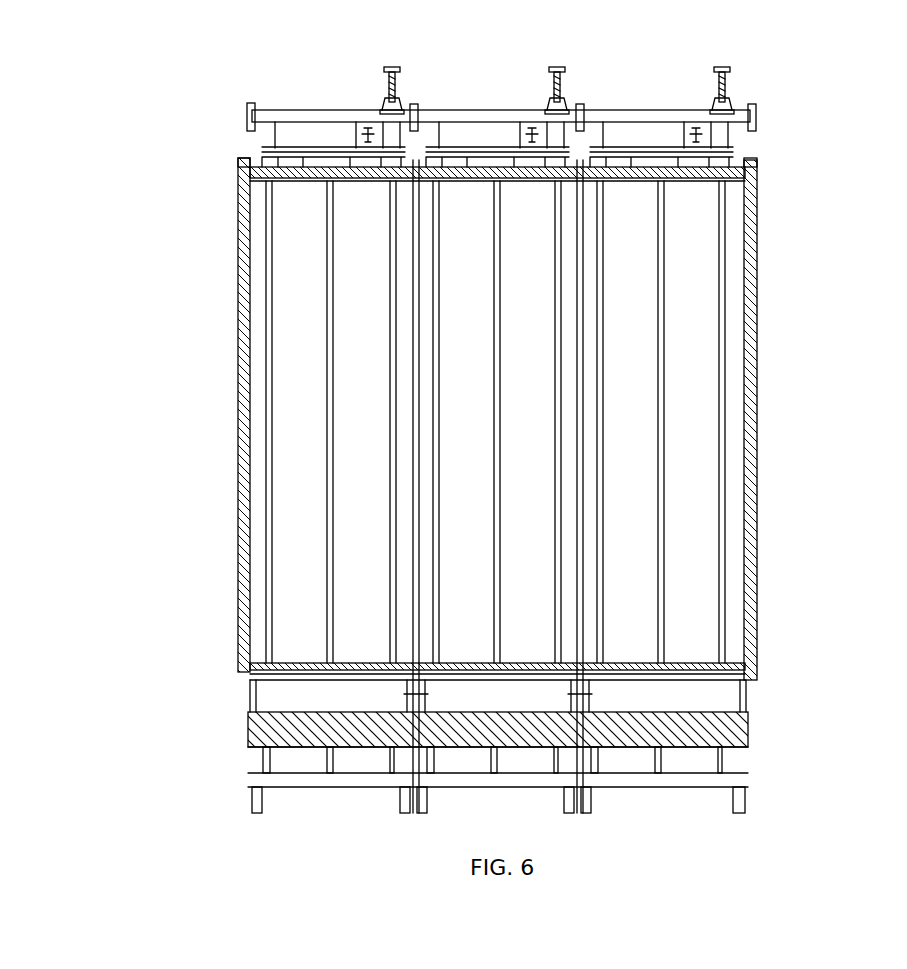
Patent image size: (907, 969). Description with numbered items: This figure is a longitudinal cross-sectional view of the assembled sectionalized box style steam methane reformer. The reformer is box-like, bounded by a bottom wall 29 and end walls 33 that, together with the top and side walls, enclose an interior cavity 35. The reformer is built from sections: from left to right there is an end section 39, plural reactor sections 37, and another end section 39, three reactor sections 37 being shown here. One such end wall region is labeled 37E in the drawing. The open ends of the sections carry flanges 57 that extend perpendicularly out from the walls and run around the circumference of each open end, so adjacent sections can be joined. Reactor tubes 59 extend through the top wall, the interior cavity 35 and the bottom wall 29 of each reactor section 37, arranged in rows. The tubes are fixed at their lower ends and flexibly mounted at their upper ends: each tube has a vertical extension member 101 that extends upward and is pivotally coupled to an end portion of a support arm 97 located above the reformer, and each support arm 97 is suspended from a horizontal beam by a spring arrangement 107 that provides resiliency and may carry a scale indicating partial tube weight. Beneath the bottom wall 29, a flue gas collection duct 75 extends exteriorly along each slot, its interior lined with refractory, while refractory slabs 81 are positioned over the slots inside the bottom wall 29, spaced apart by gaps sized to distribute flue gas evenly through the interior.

The bottom wall 29 is at (750, 690).
The end walls 33 is at (752, 158).
The interior cavity 35 is at (690, 558).
The reactor section 37 is at (318, 150).
The side wall / end plate 37E is at (237, 510).
The end section 39 is at (758, 242).
The flange 57 is at (410, 633).
The reactor tubes 59 is at (325, 632).
The flue gas collection duct 75 is at (250, 735).
The refractory slabs 81 is at (702, 662).
The support arm 97 is at (712, 100).
The vertical extension member 101 is at (745, 150).
The spring arrangement 107 is at (732, 78).